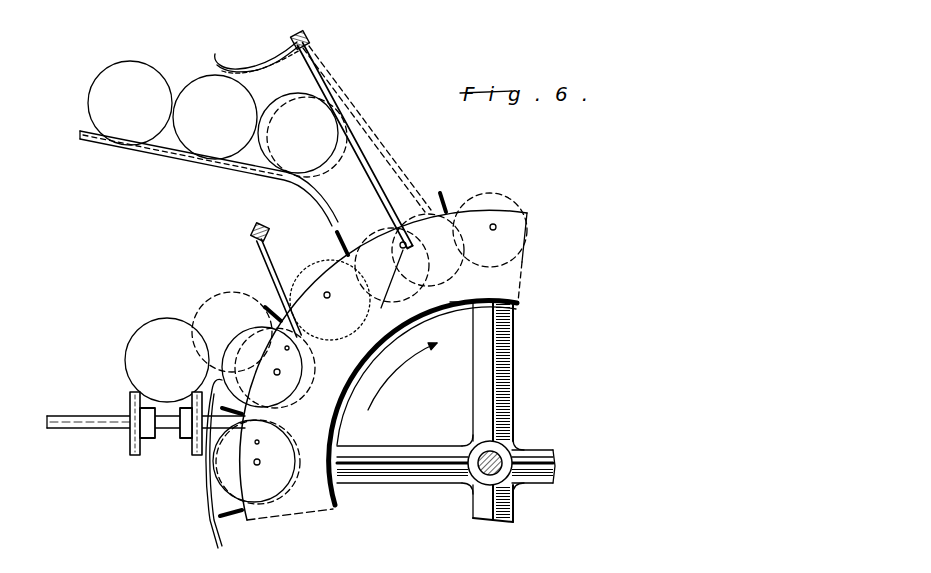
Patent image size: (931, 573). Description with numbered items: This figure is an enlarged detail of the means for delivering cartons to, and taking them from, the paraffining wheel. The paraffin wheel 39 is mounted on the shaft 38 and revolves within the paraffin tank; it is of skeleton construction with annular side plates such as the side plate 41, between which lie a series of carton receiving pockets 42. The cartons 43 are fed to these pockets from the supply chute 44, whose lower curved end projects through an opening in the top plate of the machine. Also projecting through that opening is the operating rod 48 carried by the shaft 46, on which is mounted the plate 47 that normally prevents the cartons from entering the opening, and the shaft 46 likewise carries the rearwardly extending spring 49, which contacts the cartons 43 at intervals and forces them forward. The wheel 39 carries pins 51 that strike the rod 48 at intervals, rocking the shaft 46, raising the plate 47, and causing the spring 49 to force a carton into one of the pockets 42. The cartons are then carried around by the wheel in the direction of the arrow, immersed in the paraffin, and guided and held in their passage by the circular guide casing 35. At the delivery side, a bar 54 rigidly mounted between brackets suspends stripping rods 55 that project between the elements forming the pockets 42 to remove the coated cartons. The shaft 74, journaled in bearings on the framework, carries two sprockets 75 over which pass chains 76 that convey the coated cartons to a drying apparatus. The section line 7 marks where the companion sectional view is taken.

The section line 7— 7 is at (387, 178).
The circular guide casing 35 is at (222, 542).
The shaft 38 is at (498, 457).
The paraffin wheel 39 is at (340, 418).
The annular side plate 41 is at (522, 277).
The carton receiving pockets 42 is at (370, 365).
The cartons 43 is at (290, 120).
The supply chute 44 is at (186, 150).
The shaft 46 is at (309, 40).
The plate 47 is at (298, 66).
The operating rod 48 is at (365, 148).
The spring 49 is at (258, 62).
The pins 51 is at (328, 297).
The bar 54 is at (265, 225).
The stripping rods 55 is at (270, 277).
The shaft 74 is at (81, 430).
The sprockets 75 is at (185, 440).
The chains 76 is at (186, 366).